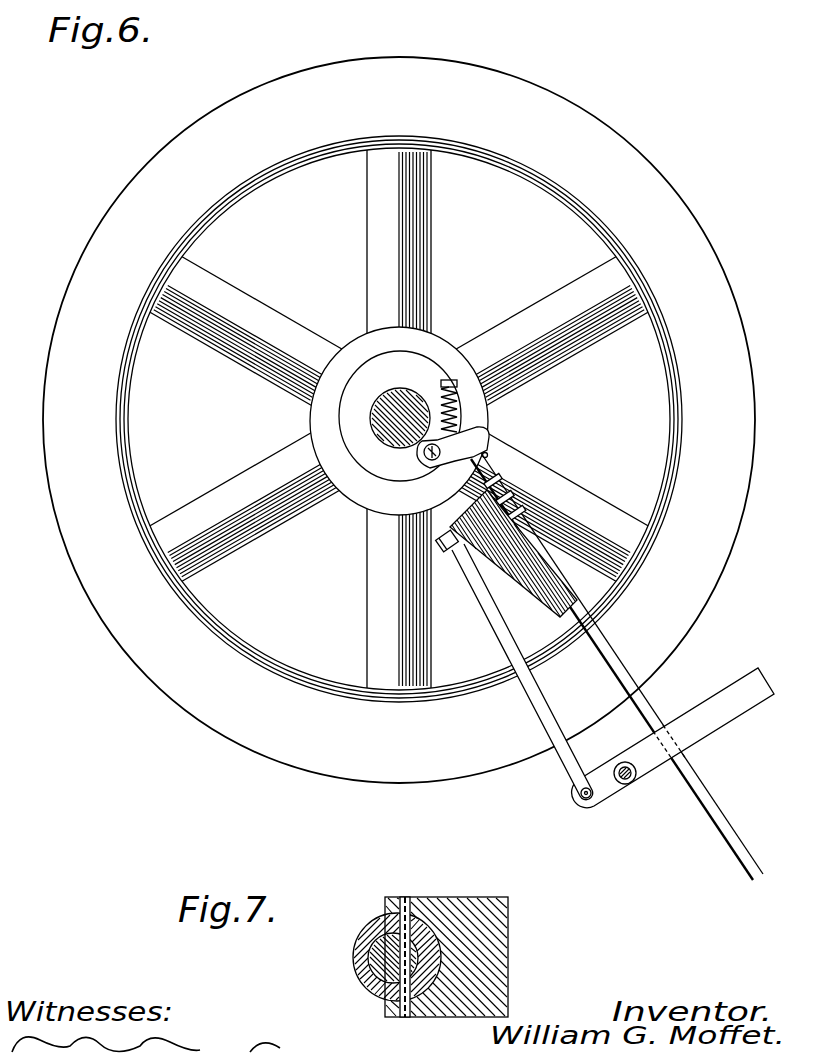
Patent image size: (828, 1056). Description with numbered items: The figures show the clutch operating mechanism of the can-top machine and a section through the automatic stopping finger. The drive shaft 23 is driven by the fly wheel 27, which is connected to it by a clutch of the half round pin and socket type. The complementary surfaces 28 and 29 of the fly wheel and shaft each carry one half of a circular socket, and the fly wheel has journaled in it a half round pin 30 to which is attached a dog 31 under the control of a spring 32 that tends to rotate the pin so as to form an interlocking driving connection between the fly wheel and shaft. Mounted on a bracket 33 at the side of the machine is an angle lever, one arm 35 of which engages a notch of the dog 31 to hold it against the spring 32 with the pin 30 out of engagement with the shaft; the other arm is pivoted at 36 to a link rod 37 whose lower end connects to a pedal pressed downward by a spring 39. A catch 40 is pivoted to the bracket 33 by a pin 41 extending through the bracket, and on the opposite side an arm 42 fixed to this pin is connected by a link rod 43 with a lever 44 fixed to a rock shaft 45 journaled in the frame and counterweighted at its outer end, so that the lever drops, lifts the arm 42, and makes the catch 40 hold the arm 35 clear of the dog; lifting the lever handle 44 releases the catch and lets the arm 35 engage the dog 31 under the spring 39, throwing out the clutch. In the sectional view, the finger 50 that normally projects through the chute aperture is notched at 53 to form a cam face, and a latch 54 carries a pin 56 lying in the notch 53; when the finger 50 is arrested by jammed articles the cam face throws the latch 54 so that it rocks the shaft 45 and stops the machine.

In FIG. 6, the drive shaft 23 is at (384, 420).
In FIG. 6, the fly wheel 27 is at (700, 383).
In FIG. 6, the complementary surface of the fly wheel 28 is at (393, 467).
In FIG. 6, the complementary surface of the shaft 29 is at (375, 462).
In FIG. 6, the half round pin 30 is at (428, 459).
In FIG. 6, the dog 31 is at (482, 434).
In FIG. 6, the spring 32 is at (460, 408).
In FIG. 6, the bracket 33 is at (521, 593).
In FIG. 6, the arm of the angle lever 35 is at (490, 454).
In FIG. 6, the pivot 36 is at (524, 514).
In FIG. 6, the link rod 37 is at (642, 695).
In FIG. 6, the spring 39 is at (640, 546).
In FIG. 6, the catch 40 is at (513, 493).
In FIG. 6, the pin 41 is at (501, 480).
In FIG. 6, the arm 42 is at (458, 551).
In FIG. 6, the link rod 43 is at (506, 648).
In FIG. 6, the lever 44 is at (598, 797).
In FIG. 6, the rock shaft 45 is at (618, 785).
In FIG. 7, the finger 50 is at (362, 975).
In FIG. 7, the notch 53 is at (432, 985).
In FIG. 7, the latch 54 is at (466, 957).
In FIG. 7, the pin 56 is at (400, 993).